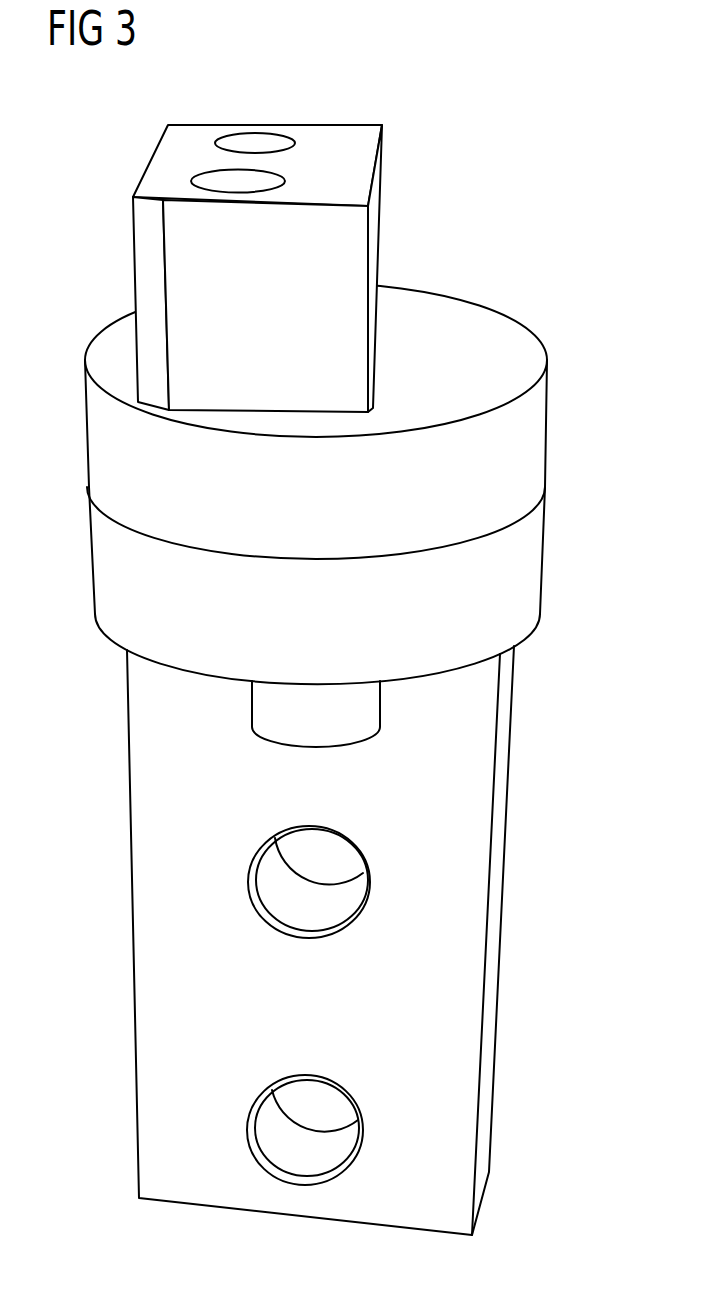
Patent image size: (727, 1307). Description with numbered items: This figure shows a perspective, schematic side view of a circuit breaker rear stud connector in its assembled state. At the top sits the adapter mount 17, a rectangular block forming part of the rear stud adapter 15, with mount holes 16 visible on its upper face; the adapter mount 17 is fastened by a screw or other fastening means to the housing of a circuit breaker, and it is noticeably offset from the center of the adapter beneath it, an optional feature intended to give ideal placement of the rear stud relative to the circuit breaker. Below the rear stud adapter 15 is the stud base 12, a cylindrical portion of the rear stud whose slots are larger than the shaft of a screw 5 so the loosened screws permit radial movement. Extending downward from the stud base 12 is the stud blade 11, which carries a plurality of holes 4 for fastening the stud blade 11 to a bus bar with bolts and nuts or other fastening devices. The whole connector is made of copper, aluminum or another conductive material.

The hole 4 is at (308, 917).
The screw 5 is at (347, 725).
The stud blade 11 is at (152, 805).
The stud base 12 is at (104, 590).
The rear stud adapter 15 is at (527, 451).
The mount hole 16 is at (227, 142).
The adapter mount 17 is at (353, 237).